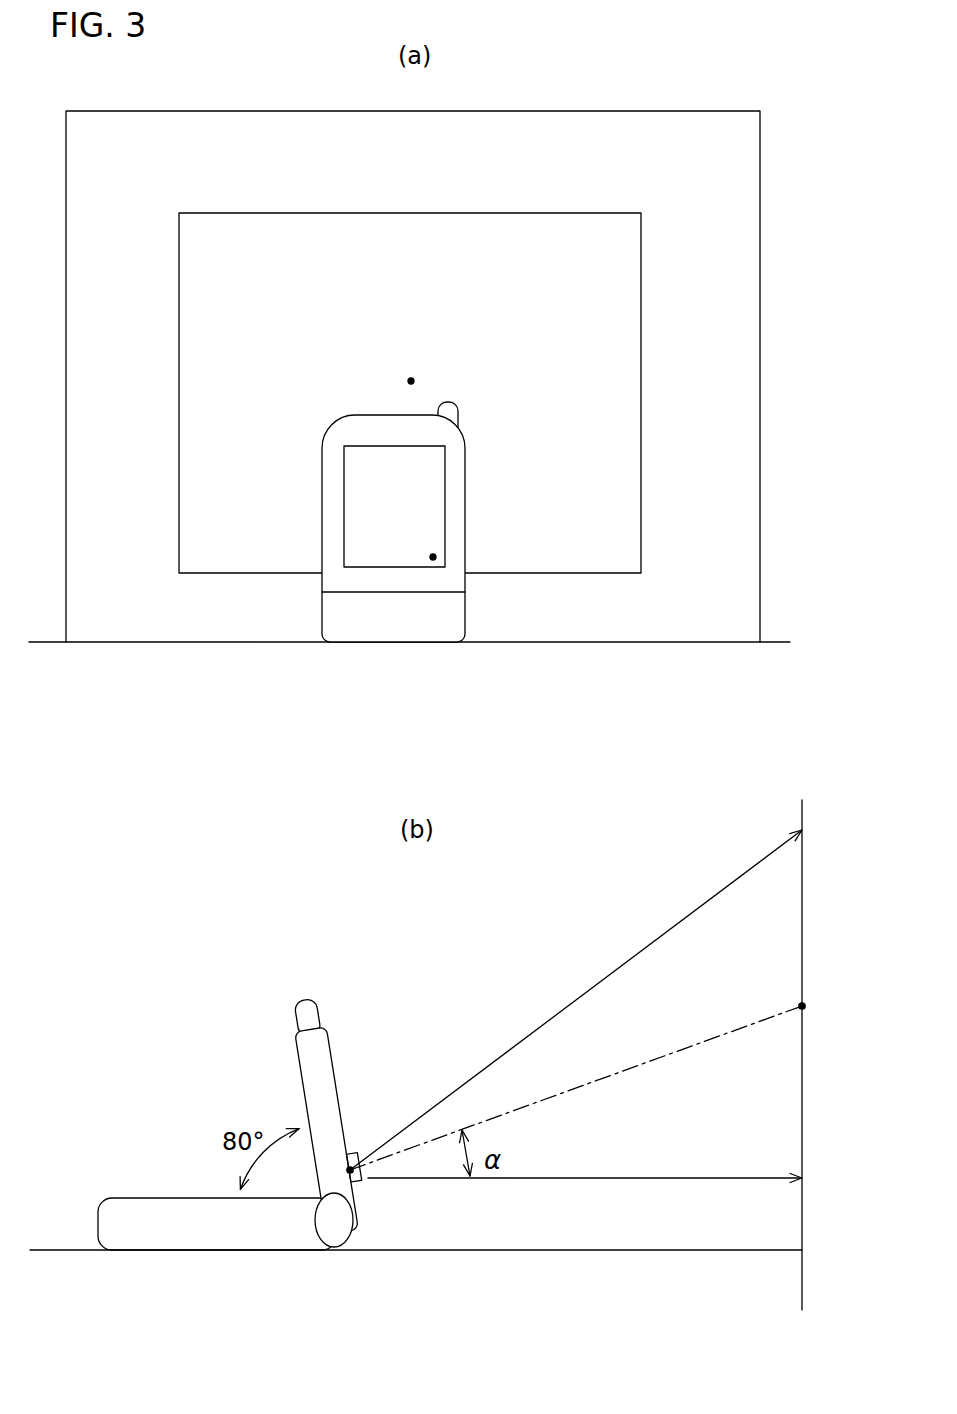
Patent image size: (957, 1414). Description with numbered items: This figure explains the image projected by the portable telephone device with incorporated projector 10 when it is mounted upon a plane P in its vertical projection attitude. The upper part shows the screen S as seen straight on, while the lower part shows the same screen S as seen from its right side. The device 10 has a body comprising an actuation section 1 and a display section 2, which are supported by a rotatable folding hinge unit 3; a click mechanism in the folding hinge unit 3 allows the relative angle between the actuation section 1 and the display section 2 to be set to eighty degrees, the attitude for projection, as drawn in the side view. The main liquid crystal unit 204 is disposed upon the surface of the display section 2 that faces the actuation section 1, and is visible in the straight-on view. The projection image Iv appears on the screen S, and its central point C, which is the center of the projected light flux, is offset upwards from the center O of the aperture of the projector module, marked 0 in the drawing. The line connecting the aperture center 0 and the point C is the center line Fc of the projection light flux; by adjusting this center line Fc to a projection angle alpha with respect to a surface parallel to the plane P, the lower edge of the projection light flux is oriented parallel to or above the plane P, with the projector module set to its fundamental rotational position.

The portable telephone device with incorporated projector 10 is at (312, 437).
The actuation section 1 is at (173, 1237).
The display section 2 is at (310, 1063).
The folding hinge unit 3 is at (332, 1235).
The main liquid crystal unit 204 is at (357, 520).
The center of the aperture of the projector module 0 is at (433, 557).
The central point of the projection light flux C is at (595, 705).
The projection image Iv is at (430, 203).
The screen S is at (762, 222).
The plane P is at (415, 969).
The center line of the projection light flux Fc is at (699, 1039).